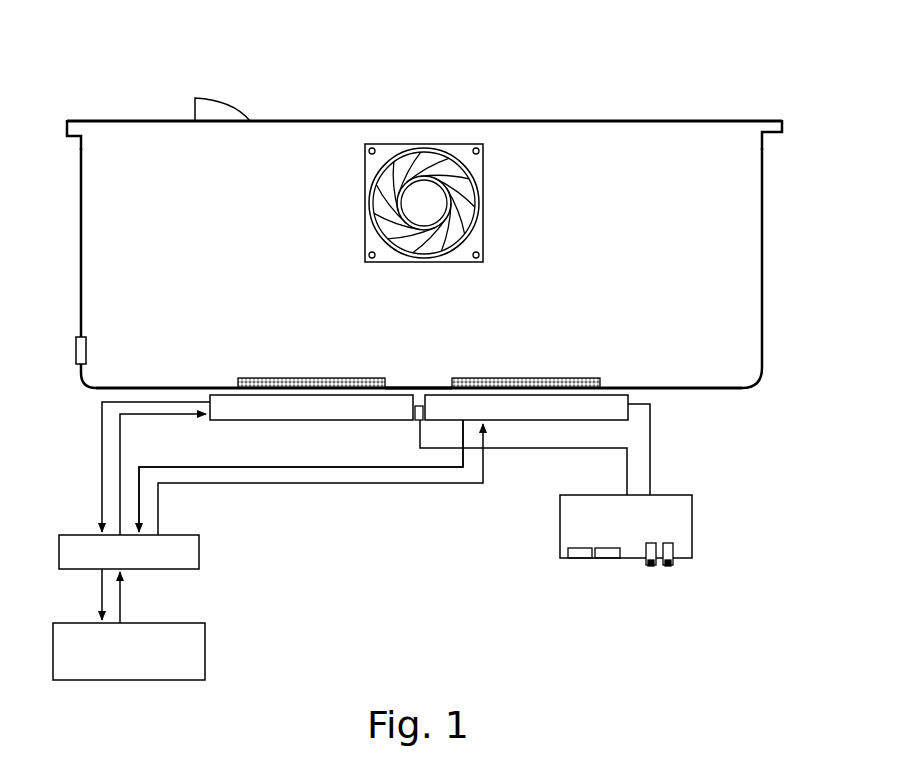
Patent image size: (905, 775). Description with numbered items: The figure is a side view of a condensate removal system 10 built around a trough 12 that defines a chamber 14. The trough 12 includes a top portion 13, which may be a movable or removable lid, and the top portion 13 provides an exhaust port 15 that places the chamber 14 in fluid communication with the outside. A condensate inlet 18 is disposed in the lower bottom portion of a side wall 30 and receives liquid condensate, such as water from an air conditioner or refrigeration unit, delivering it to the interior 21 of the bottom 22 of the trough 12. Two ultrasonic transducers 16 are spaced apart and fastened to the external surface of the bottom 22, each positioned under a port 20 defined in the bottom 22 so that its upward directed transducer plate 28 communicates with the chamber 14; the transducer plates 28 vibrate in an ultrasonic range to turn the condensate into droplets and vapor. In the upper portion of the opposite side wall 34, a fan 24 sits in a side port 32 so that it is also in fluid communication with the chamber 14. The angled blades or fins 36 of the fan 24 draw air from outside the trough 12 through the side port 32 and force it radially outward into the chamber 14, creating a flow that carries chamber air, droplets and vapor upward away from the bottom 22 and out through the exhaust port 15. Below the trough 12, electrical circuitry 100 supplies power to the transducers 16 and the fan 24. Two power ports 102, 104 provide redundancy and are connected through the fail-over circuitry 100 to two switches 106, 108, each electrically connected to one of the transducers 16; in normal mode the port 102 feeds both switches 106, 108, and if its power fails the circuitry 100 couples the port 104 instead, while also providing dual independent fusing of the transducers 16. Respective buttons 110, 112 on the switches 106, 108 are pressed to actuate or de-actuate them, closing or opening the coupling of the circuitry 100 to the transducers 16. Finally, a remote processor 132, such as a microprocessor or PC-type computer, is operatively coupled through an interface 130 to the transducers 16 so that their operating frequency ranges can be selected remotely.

The system 10 is at (322, 56).
The trough 12 is at (777, 118).
The top portion 13 is at (622, 120).
The chamber 14 is at (119, 142).
The exhaust port 15 is at (215, 105).
The ultrasonic transducer 16 is at (223, 421).
The condensate inlet 18 is at (72, 347).
The port 20 is at (449, 381).
The interior 21 is at (661, 382).
The bottom 22 is at (718, 389).
The fan 24 is at (427, 203).
The transducer plate 28 is at (246, 378).
The side wall 30 is at (80, 248).
The side port 32 is at (375, 168).
The side wall 34 is at (238, 228).
The blades or fins 36 is at (470, 208).
The electrical circuitry 100 is at (598, 528).
The power port 102 is at (608, 548).
The power port 104 is at (572, 549).
The switch 106 is at (650, 543).
The switch 108 is at (673, 546).
The button 110 is at (650, 567).
The button 112 is at (670, 567).
The interface 130 is at (199, 550).
The remote processor 132 is at (205, 637).